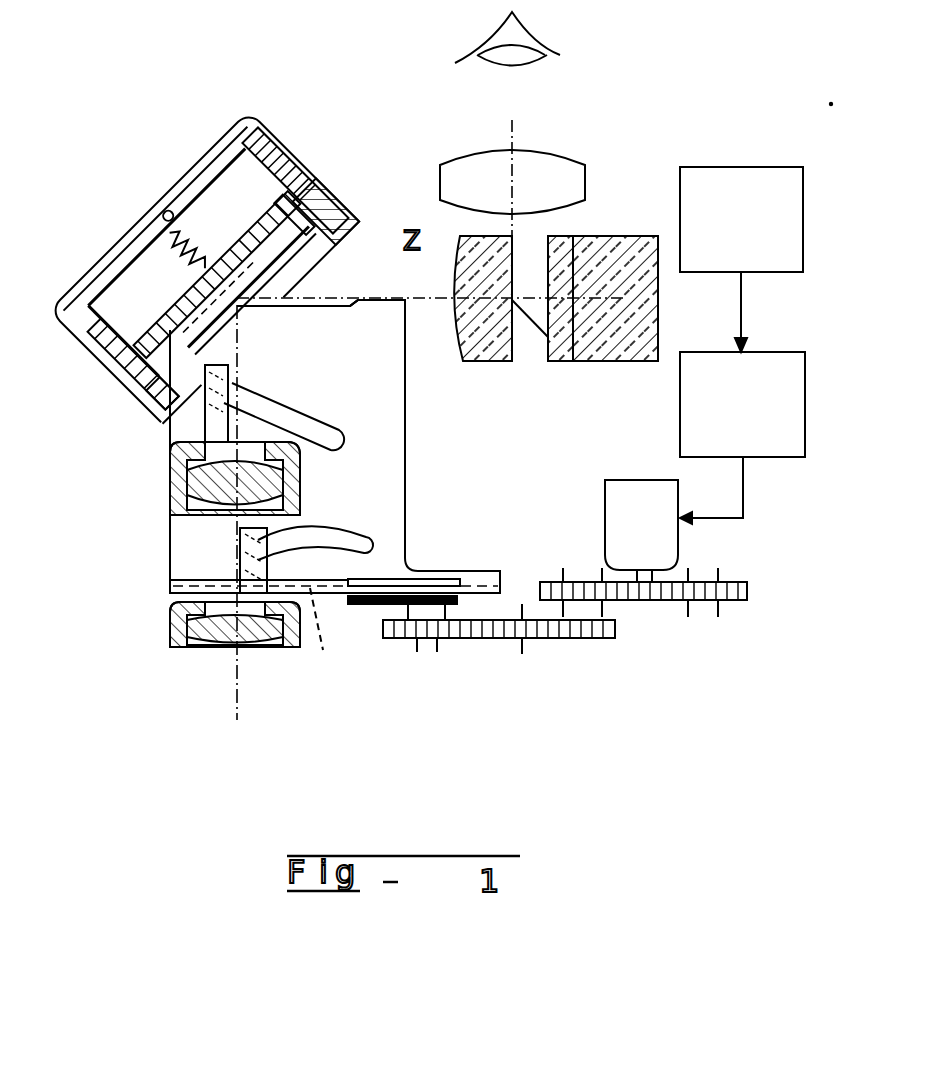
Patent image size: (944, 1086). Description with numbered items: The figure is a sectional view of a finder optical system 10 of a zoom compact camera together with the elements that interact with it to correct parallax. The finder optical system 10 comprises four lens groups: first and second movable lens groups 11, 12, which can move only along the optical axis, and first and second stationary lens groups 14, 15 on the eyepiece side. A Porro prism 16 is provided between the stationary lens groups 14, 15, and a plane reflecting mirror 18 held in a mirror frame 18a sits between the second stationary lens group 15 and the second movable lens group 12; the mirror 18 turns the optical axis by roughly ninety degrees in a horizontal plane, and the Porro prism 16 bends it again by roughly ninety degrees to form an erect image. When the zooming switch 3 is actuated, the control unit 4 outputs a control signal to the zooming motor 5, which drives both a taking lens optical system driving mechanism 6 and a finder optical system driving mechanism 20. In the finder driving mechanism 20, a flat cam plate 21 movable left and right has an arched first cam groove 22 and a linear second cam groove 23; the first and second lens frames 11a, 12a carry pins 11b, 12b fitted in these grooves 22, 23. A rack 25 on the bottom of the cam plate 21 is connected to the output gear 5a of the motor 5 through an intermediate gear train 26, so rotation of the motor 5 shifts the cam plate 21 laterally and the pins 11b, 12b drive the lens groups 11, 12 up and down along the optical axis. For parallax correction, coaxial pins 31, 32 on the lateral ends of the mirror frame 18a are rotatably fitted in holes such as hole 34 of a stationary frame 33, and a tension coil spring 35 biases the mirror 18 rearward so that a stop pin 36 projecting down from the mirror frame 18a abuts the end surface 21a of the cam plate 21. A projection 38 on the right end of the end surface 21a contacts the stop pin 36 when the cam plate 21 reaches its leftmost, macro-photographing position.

The zooming switch 3 is at (710, 167).
The control unit 4 is at (680, 412).
The zooming motor 5 is at (622, 495).
The output gear 5a is at (628, 604).
The taking lens optical system driving mechanism 6 is at (742, 582).
The finder optical system 10 is at (341, 126).
The first movable lens group 11 is at (197, 648).
The first lens frame 11a is at (186, 632).
The pin 11b is at (240, 548).
The second movable lens group 12 is at (192, 505).
The second lens frame 12a is at (172, 470).
The pin 12b is at (200, 395).
The first stationary lens group 14 is at (552, 148).
The second stationary lens group 15 is at (456, 255).
The Porro prism 16 is at (600, 234).
The plane reflecting mirror 18 is at (175, 193).
The mirror frame 18a is at (137, 257).
The finder optical system driving mechanism 20 is at (357, 618).
The cam plate 21 is at (388, 418).
The end surface 21a is at (329, 303).
The first cam groove 22 is at (365, 541).
The second cam groove 23 is at (345, 440).
The rack 25 is at (312, 636).
The intermediate gear train 26 is at (472, 655).
The coaxial pin 31 is at (143, 383).
The coaxial pin 32 is at (300, 172).
The stationary frame 33 is at (175, 197).
The hole 34 is at (137, 400).
The tension coil spring 35 is at (172, 220).
The stop pin 36 is at (255, 290).
The projection 38 is at (358, 310).